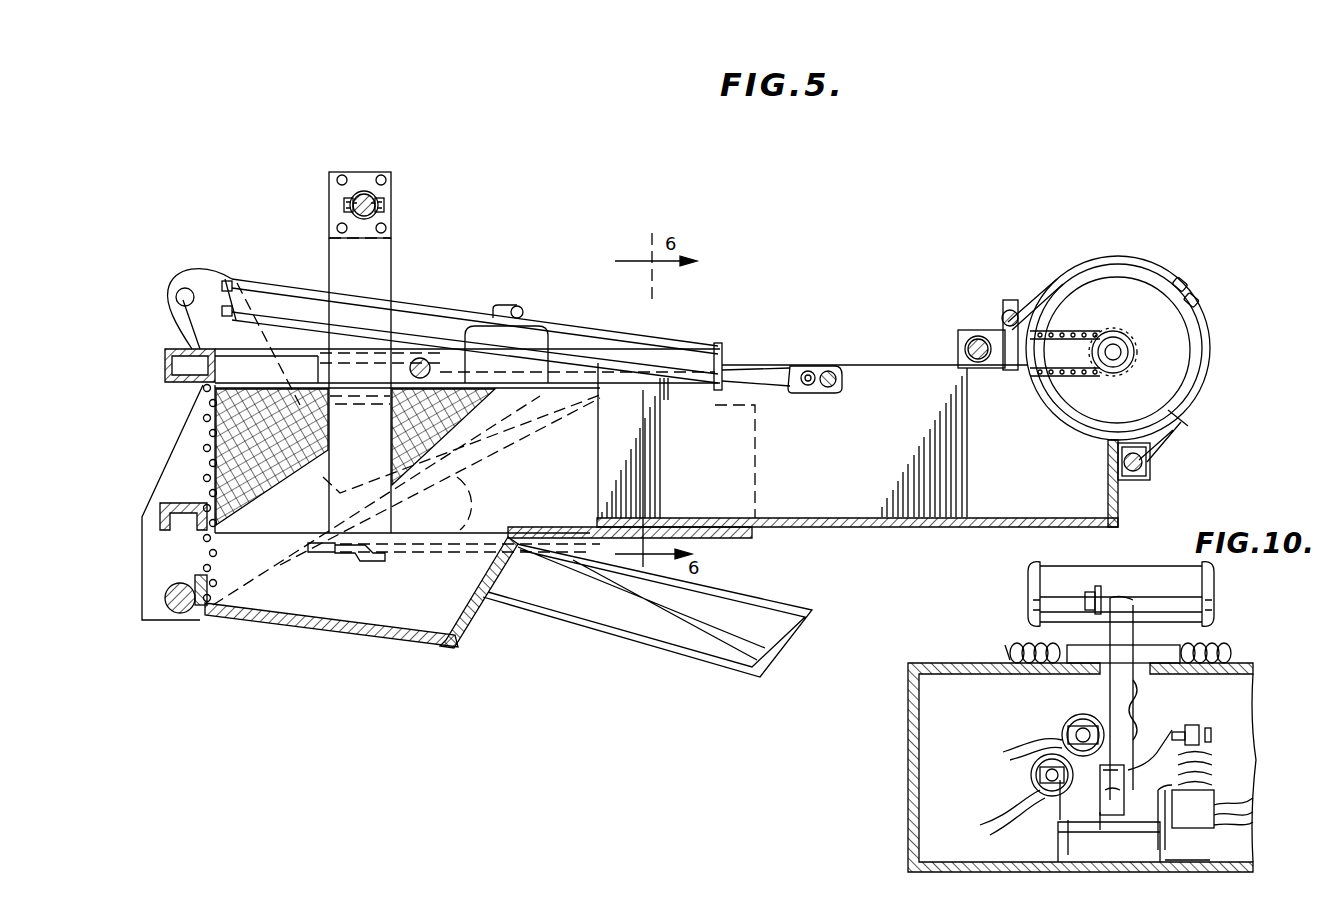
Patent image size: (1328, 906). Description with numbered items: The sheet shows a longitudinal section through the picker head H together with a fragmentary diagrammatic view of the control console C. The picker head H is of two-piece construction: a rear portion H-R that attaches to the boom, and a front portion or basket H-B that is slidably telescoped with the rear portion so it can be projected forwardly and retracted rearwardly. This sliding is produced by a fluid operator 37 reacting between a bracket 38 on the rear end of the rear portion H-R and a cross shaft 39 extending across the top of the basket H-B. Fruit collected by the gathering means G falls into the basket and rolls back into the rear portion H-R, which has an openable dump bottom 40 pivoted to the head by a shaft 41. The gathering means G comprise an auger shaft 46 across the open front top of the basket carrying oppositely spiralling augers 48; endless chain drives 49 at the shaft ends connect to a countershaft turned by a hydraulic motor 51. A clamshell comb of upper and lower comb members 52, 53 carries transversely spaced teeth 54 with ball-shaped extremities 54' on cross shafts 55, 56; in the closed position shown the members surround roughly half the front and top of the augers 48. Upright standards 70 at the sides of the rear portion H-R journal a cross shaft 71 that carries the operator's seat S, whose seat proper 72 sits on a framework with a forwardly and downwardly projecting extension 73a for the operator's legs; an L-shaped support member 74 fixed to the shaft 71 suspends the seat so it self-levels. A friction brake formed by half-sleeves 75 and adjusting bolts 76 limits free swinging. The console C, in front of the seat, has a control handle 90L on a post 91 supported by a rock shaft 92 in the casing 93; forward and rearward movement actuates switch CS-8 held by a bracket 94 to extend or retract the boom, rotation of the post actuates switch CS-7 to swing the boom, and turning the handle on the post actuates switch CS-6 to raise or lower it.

In FIG. 5, the fluid operator 37 is at (425, 325).
In FIG. 5, the bracket 38 is at (176, 332).
In FIG. 5, the cross shaft 39 is at (815, 370).
In FIG. 5, the dump bottom 40 is at (322, 634).
In FIG. 5, the shaft 41 is at (180, 614).
In FIG. 5, the auger shaft 46 is at (1118, 358).
In FIG. 5, the augers 48 is at (1190, 378).
In FIG. 5, the endless chain drives 49 is at (1072, 378).
In FIG. 5, the hydraulic motor 51 is at (960, 337).
In FIG. 5, the upper comb member 52 is at (1140, 262).
In FIG. 5, the lower comb member 53 is at (1186, 418).
In FIG. 5, the teeth 54 is at (1108, 356).
In FIG. 5, the ball-shaped extremities 54' is at (1203, 286).
In FIG. 5, the cross shaft 55 is at (1007, 310).
In FIG. 5, the cross shaft 56 is at (1150, 471).
In FIG. 5, the upright standards 70 is at (393, 268).
In FIG. 5, the cross shaft 71 is at (366, 195).
In FIG. 5, the seat proper 72 is at (234, 273).
In FIG. 5, the extension 73a is at (648, 648).
In FIG. 5, the L-shaped support member 74 is at (345, 556).
In FIG. 5, the half-sleeves 75 is at (380, 198).
In FIG. 5, the adjusting bolts 76 is at (345, 200).
In FIG. 5, the operator's seat S is at (213, 256).
In FIG. 5, the control console C is at (519, 306).
In FIG. 5, the picker head H is at (796, 352).
In FIG. 5, the fruit gathering means G is at (1207, 330).
In FIG. 5, the basket H-B is at (910, 528).
In FIG. 5, the rear portion H-R is at (560, 543).
In FIG. 10, the control handle 90L is at (1147, 566).
In FIG. 10, the post 91 is at (1133, 632).
In FIG. 10, the rock shaft 92 is at (1098, 840).
In FIG. 10, the console casing 93 is at (908, 736).
In FIG. 10, the bracket 94 is at (1162, 848).
In FIG. 10, the switch CS-6 is at (1066, 722).
In FIG. 10, the switch CS-7 is at (1032, 783).
In FIG. 10, the switch CS-8 is at (1212, 758).